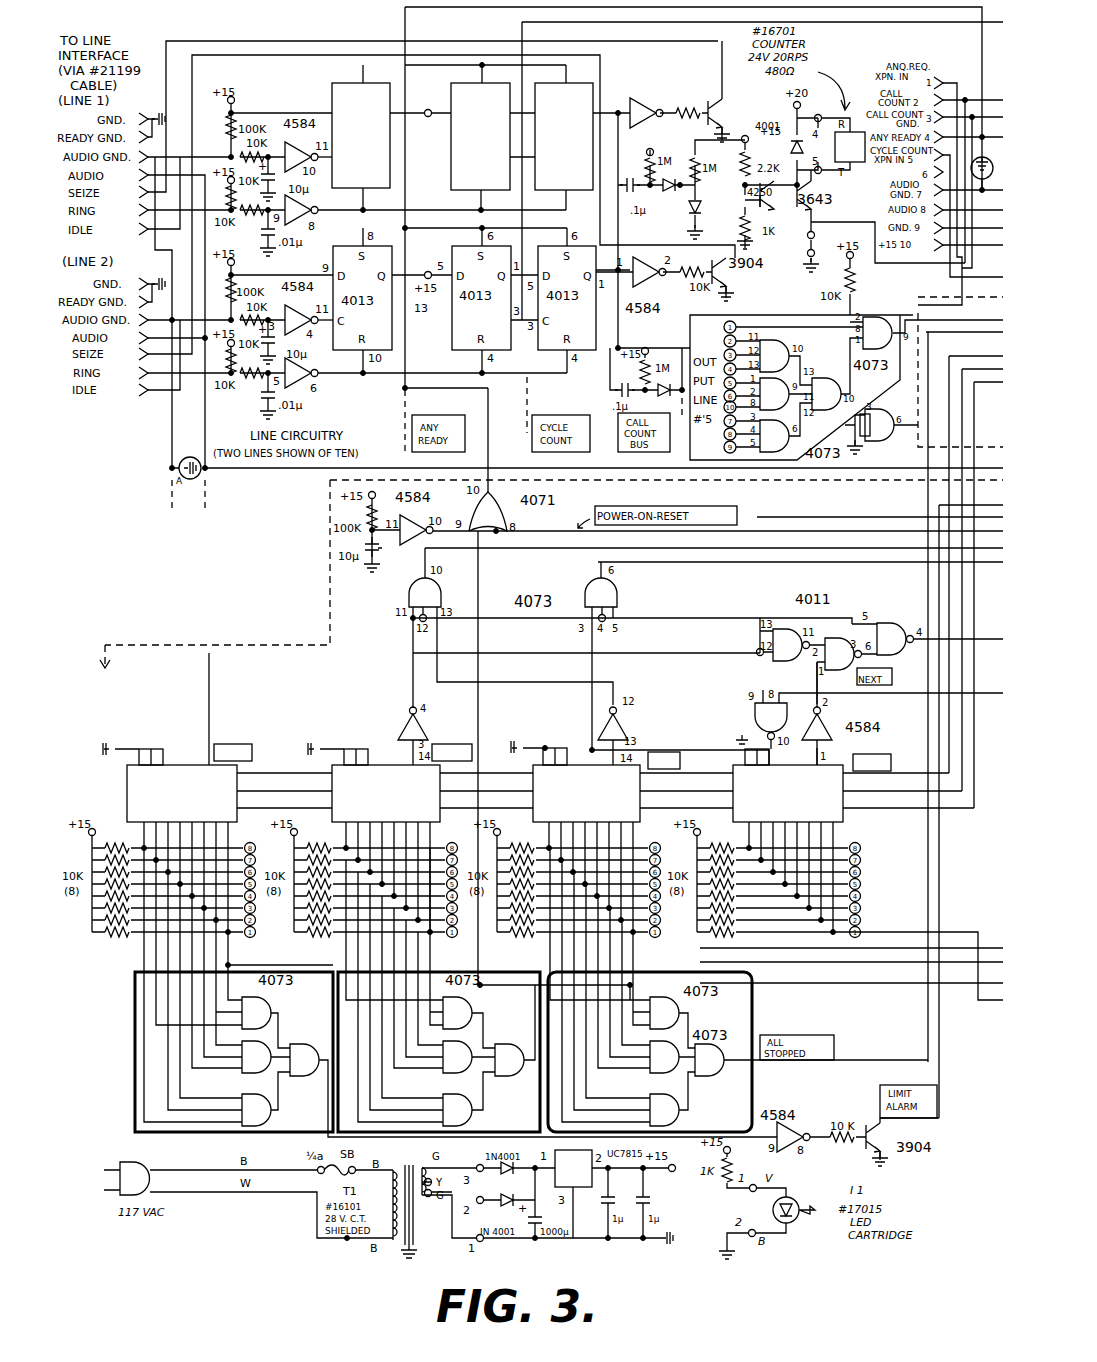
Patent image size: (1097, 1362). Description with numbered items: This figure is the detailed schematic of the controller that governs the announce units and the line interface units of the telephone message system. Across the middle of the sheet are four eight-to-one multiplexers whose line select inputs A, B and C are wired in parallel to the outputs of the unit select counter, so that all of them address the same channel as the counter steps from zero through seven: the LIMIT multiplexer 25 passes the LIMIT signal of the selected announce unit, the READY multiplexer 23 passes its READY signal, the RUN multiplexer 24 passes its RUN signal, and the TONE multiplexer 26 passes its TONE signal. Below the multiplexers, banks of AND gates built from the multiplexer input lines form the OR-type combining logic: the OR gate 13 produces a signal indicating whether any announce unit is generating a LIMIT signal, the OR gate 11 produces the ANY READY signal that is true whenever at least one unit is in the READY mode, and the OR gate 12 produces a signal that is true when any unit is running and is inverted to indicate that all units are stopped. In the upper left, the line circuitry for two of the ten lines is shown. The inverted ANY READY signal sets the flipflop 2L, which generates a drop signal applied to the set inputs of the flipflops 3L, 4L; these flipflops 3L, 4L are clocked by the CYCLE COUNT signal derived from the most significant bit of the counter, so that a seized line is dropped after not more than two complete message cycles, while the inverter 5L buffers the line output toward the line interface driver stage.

The flipflop 2L is at (372, 133).
The flipflop 3L is at (474, 134).
The flipflop 4L is at (516, 198).
The line 1 inverter 4584 5L is at (685, 107).
The LIMIT multiplexer 25 is at (217, 744).
The READY multiplexer 23 is at (420, 789).
The RUN multiplexer 24 is at (640, 788).
The TONE multiplexer 26 is at (853, 791).
The OR gate 13 is at (501, 1063).
The OR gate 11 is at (481, 1055).
The OR gate 12 is at (782, 1057).